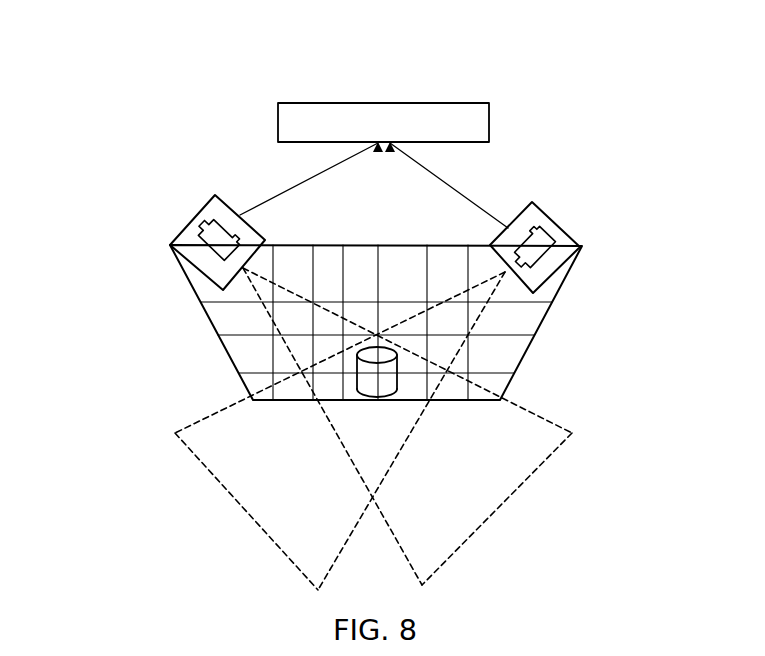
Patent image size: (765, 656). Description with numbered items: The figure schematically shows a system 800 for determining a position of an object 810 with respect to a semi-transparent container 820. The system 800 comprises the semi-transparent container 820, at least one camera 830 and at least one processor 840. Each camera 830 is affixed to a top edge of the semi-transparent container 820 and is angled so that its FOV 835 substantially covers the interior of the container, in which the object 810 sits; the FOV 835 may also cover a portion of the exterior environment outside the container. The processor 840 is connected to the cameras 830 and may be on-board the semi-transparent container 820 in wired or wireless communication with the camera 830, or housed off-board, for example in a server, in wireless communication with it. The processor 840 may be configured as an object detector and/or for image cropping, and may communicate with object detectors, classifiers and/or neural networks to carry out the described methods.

The system 800 is at (393, 42).
The object 810 is at (347, 373).
The semi-transparent container 820 is at (542, 323).
The camera 830 is at (187, 222).
The FOV 835 is at (528, 480).
The processor 840 is at (489, 122).